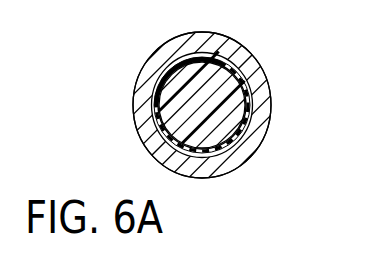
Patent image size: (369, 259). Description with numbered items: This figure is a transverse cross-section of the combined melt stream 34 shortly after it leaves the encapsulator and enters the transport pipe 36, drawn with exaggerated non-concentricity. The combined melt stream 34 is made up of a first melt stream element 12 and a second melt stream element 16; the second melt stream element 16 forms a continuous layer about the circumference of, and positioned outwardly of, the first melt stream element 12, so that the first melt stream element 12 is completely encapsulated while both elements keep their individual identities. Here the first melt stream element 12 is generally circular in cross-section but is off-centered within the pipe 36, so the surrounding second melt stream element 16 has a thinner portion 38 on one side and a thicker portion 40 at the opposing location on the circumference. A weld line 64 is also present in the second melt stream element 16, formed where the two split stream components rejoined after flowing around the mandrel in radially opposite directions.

The first melt stream element 12 is at (223, 46).
The second melt stream element 16 is at (173, 66).
The combined melt stream 34 is at (253, 109).
The transport pipe 36 is at (262, 58).
The thinner portion 38 is at (206, 176).
The thicker portion 40 is at (203, 42).
The weld line 64 is at (147, 125).